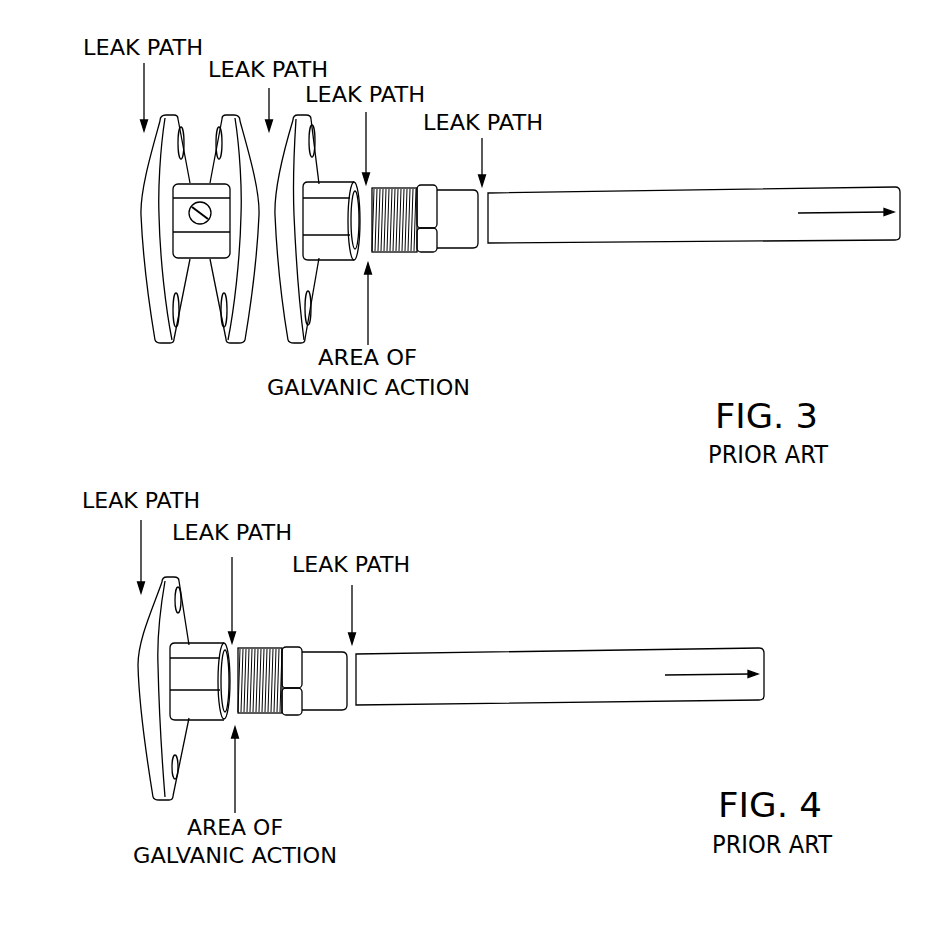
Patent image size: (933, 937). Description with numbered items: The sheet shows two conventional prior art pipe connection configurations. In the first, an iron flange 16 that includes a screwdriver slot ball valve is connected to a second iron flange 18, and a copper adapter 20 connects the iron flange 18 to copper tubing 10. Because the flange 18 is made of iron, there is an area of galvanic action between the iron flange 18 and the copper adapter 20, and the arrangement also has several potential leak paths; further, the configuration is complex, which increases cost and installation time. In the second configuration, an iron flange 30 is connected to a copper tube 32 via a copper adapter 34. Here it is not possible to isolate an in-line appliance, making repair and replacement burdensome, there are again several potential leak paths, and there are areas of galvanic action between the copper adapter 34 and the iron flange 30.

In FIG. 3, the copper tubing 10 is at (670, 243).
In FIG. 3, the iron flange 16 is at (200, 260).
In FIG. 3, the second iron flange 18 is at (297, 342).
In FIG. 3, the copper adapter 20 is at (457, 249).
In FIG. 4, the iron flange 30 is at (163, 799).
In FIG. 4, the copper tube 32 is at (521, 706).
In FIG. 4, the copper adapter 34 is at (295, 716).